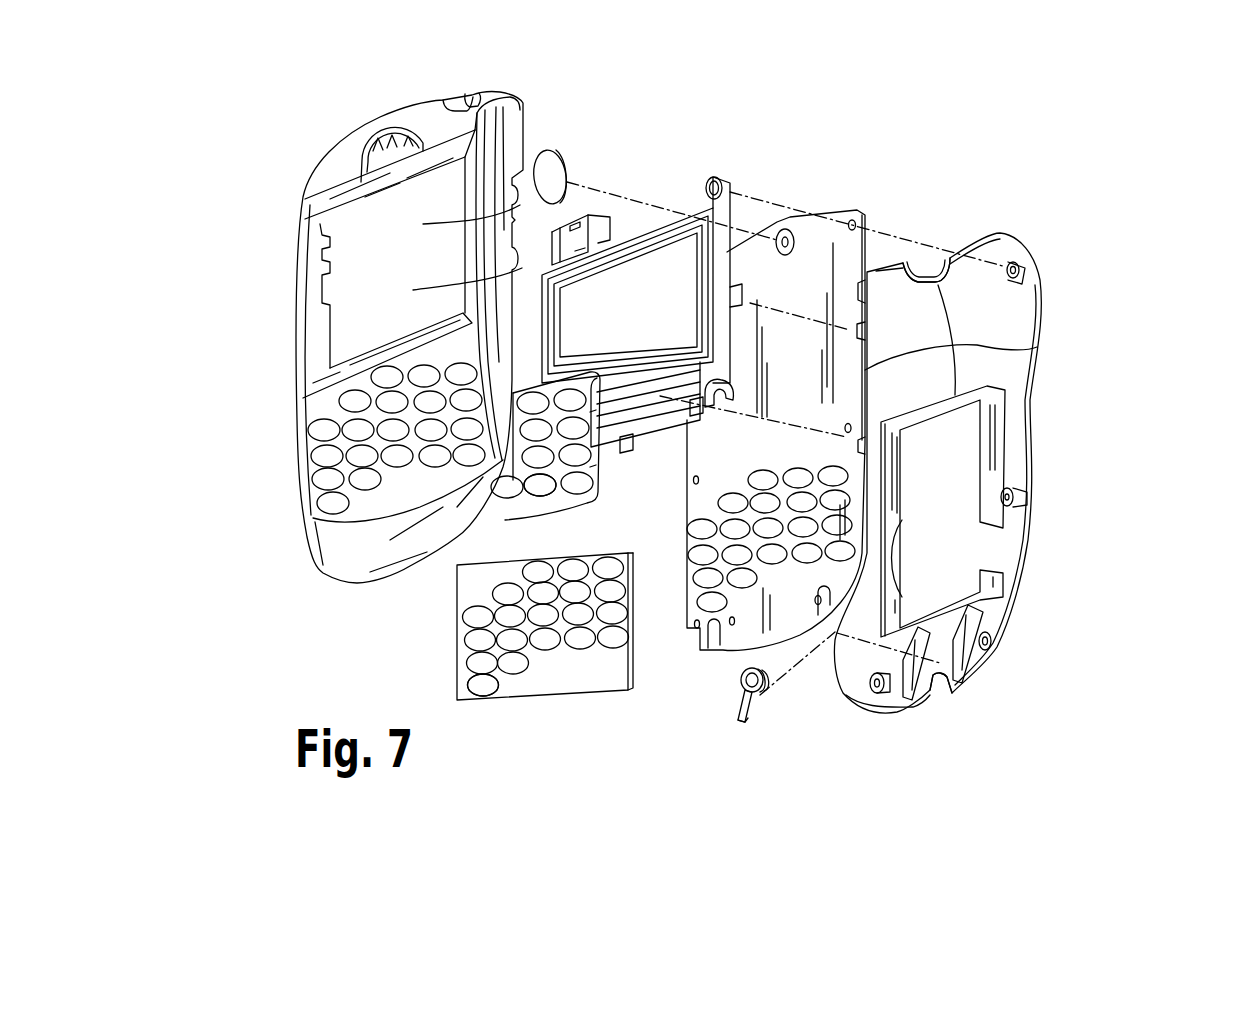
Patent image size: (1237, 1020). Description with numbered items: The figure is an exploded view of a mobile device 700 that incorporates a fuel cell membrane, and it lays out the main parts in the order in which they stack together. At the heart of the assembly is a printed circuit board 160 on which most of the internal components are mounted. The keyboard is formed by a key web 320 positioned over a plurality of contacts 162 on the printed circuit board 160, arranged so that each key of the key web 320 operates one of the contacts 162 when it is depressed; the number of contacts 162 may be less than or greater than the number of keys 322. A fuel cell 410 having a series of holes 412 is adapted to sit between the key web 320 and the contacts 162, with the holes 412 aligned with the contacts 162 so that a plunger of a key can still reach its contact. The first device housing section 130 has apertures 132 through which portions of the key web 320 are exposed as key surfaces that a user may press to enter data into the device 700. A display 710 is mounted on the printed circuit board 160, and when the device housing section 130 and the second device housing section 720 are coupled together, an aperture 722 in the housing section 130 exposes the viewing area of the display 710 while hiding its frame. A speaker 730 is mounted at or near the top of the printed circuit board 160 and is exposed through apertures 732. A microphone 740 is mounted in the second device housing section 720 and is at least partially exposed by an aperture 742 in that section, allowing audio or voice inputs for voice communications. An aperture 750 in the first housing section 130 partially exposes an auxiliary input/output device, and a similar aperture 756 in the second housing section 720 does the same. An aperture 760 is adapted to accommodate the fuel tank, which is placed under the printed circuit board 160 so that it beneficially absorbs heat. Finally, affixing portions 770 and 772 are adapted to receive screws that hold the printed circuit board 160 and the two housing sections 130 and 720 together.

The device 700 is at (1072, 174).
The second device housing section 720 is at (988, 233).
The aperture 756 is at (930, 252).
The affixing portion 770 is at (1022, 273).
The aperture 760 is at (947, 458).
The affixing portion 772 is at (1022, 500).
The aperture 742 is at (937, 690).
The printed circuit board 160 is at (833, 209).
The contacts 162 is at (780, 557).
The microphone 740 is at (747, 680).
The display 710 is at (638, 275).
The speaker 730 is at (553, 176).
The aperture 750 is at (443, 108).
The apertures 732 is at (360, 153).
The aperture 722 is at (370, 318).
The apertures 132 is at (430, 432).
The device housing section 130 is at (308, 549).
The key web 320 is at (560, 497).
The keys 322 is at (537, 483).
The fuel cell 410 is at (570, 690).
The holes 412 is at (481, 692).